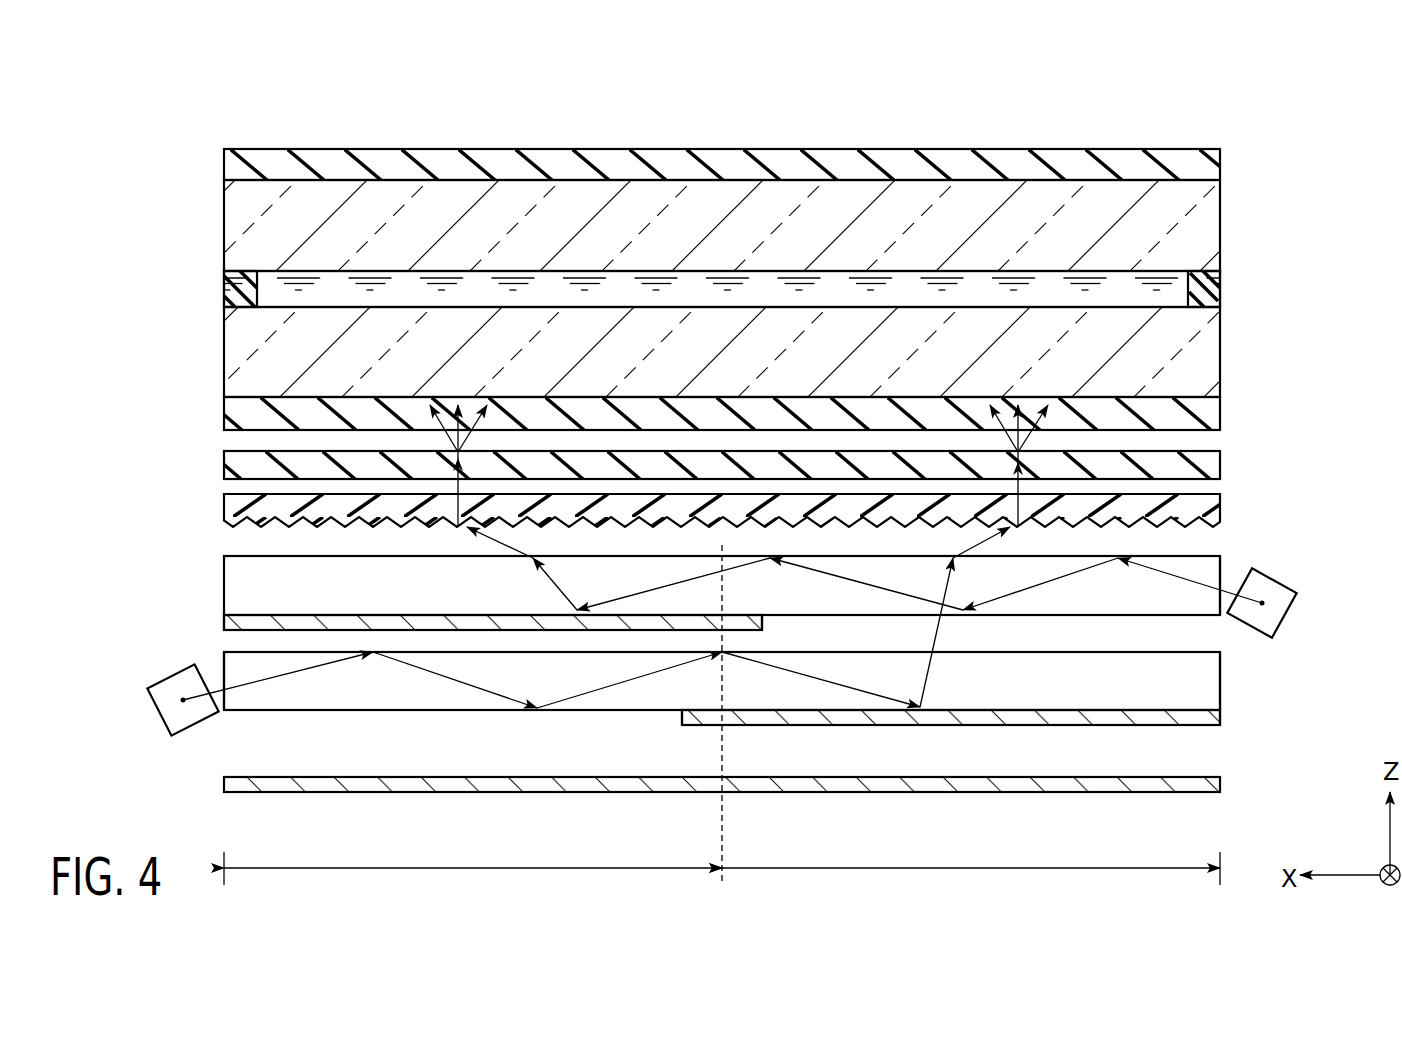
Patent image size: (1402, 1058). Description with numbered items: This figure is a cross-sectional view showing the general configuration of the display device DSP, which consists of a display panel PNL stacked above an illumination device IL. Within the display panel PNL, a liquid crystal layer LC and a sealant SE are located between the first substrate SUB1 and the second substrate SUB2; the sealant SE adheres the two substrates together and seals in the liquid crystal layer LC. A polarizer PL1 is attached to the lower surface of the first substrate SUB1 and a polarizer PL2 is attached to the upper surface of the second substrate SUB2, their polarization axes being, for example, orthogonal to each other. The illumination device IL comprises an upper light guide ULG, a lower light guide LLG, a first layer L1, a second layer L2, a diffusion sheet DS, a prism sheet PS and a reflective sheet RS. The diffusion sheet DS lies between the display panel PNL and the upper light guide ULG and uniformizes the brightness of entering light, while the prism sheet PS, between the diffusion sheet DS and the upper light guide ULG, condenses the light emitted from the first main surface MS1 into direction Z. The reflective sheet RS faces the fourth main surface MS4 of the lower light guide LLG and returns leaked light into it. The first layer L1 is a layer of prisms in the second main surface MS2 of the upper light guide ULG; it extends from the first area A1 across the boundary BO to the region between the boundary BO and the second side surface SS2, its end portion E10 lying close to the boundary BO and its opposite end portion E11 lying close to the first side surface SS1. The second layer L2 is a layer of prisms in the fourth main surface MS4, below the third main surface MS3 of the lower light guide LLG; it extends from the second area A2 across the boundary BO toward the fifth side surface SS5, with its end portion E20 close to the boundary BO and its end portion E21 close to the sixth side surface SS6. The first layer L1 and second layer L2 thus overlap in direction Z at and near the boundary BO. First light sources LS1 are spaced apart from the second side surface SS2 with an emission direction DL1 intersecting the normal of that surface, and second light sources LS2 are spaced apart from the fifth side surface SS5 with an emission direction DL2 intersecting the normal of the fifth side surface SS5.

The display device DSP is at (157, 93).
The display panel PNL is at (162, 277).
The polarizer PL2 is at (1210, 163).
The second substrate SUB2 is at (1213, 223).
The liquid crystal layer LC is at (1118, 288).
The sealant SE is at (1216, 283).
The first substrate SUB1 is at (1213, 349).
The polarizer PL1 is at (1212, 411).
The diffusion sheet DS is at (1211, 468).
The prism sheet PS is at (1212, 505).
The illumination device IL is at (140, 600).
The upper light guide ULG is at (1153, 608).
The lower light guide LLG is at (1212, 668).
The first side surface SS1 is at (223, 573).
The second side surface SS2 is at (1230, 558).
The fifth side surface SS5 is at (220, 655).
The sixth side surface SS6 is at (1225, 688).
The first main surface MS1 is at (270, 553).
The second main surface MS2 is at (347, 626).
The third main surface MS3 is at (992, 645).
The fourth main surface MS4 is at (1070, 718).
The end portion E11 is at (223, 618).
The end portion E10 is at (768, 622).
The end portion E21 is at (1225, 715).
The end portion E20 is at (677, 720).
The first layer L1 is at (223, 627).
The second layer L2 is at (1222, 723).
The first light source LS1 is at (1295, 610).
The second light source LS2 is at (157, 712).
The emission direction DL1 is at (1255, 560).
The emission direction DL2 is at (228, 720).
The reflective sheet RS is at (1222, 783).
The first area A1 is at (473, 878).
The second area A2 is at (971, 878).
The boundary BO is at (724, 732).